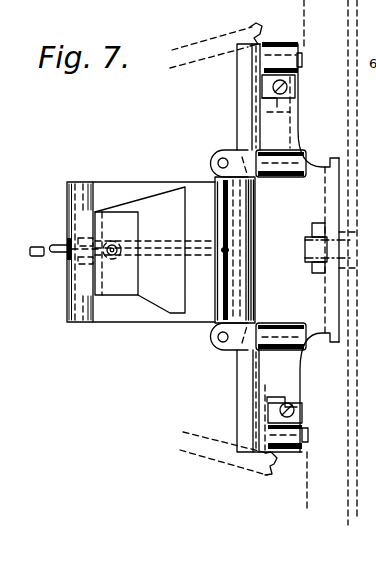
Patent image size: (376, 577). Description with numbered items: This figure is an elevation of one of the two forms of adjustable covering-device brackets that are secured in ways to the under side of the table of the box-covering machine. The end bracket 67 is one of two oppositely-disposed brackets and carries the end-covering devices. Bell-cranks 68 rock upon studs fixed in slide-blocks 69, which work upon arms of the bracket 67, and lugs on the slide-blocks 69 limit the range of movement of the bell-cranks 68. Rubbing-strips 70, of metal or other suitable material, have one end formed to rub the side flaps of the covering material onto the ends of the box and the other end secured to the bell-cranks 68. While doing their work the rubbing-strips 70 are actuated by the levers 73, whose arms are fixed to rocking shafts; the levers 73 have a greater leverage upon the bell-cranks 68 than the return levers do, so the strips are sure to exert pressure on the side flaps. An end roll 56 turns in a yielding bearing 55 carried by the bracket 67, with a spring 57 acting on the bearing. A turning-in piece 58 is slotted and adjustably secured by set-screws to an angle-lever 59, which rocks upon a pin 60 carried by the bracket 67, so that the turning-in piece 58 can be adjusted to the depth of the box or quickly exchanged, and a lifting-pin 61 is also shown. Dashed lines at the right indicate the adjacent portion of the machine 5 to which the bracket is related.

The frame member 5 is at (354, 508).
The yielding bearings 55 is at (212, 257).
The end rolls 56 is at (251, 250).
The springs 57 is at (198, 237).
The turning-in pieces 58 is at (140, 231).
The angle-levers 59 is at (121, 235).
The pins 60 is at (70, 276).
The lifting-pins 61 is at (137, 264).
The end brackets 67 is at (205, 311).
The bell-cranks 68 is at (297, 49).
The slide-blocks 69 is at (250, 78).
The rubbing-strips 70 is at (290, 178).
The levers 73 is at (204, 40).